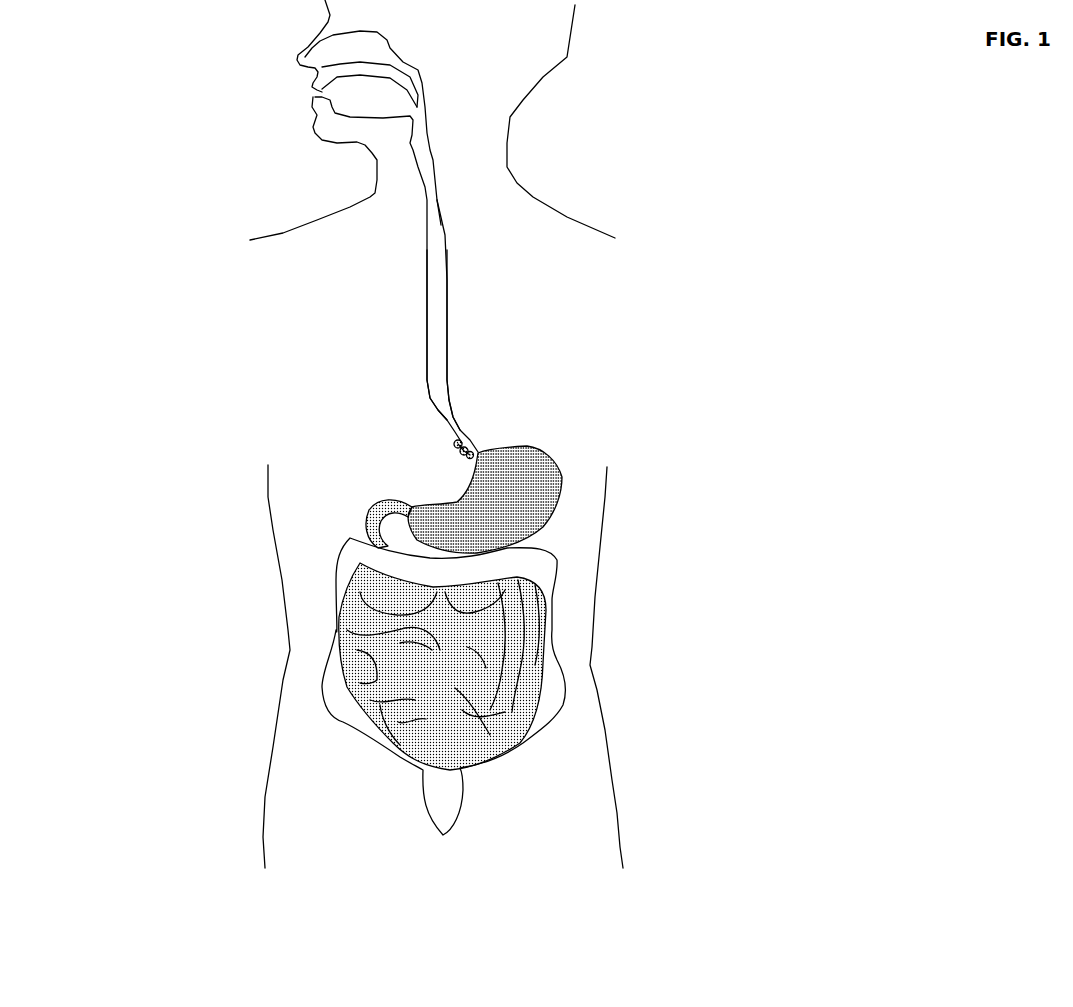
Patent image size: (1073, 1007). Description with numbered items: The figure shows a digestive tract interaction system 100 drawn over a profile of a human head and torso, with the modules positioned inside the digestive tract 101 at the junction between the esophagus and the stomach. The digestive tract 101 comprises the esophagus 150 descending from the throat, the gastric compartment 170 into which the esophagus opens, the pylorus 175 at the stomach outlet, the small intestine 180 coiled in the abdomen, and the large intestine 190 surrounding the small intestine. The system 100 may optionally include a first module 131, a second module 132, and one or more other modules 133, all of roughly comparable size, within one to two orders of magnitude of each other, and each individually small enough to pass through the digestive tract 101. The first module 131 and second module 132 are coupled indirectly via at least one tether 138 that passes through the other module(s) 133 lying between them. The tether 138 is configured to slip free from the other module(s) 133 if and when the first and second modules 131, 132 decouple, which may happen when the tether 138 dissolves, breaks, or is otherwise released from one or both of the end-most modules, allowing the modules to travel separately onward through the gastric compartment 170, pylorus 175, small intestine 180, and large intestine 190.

The system 100 is at (220, 372).
The digestive tract 101 is at (467, 318).
The 1st module 131 is at (453, 451).
The 2nd module 132 is at (468, 462).
The other module(s) 133 is at (467, 440).
The tether 138 is at (472, 448).
The esophagus 150 is at (435, 337).
The gastric compartment 170 is at (485, 499).
The pylorus 175 is at (400, 503).
The small intestine 180 is at (550, 603).
The large intestine 190 is at (555, 693).